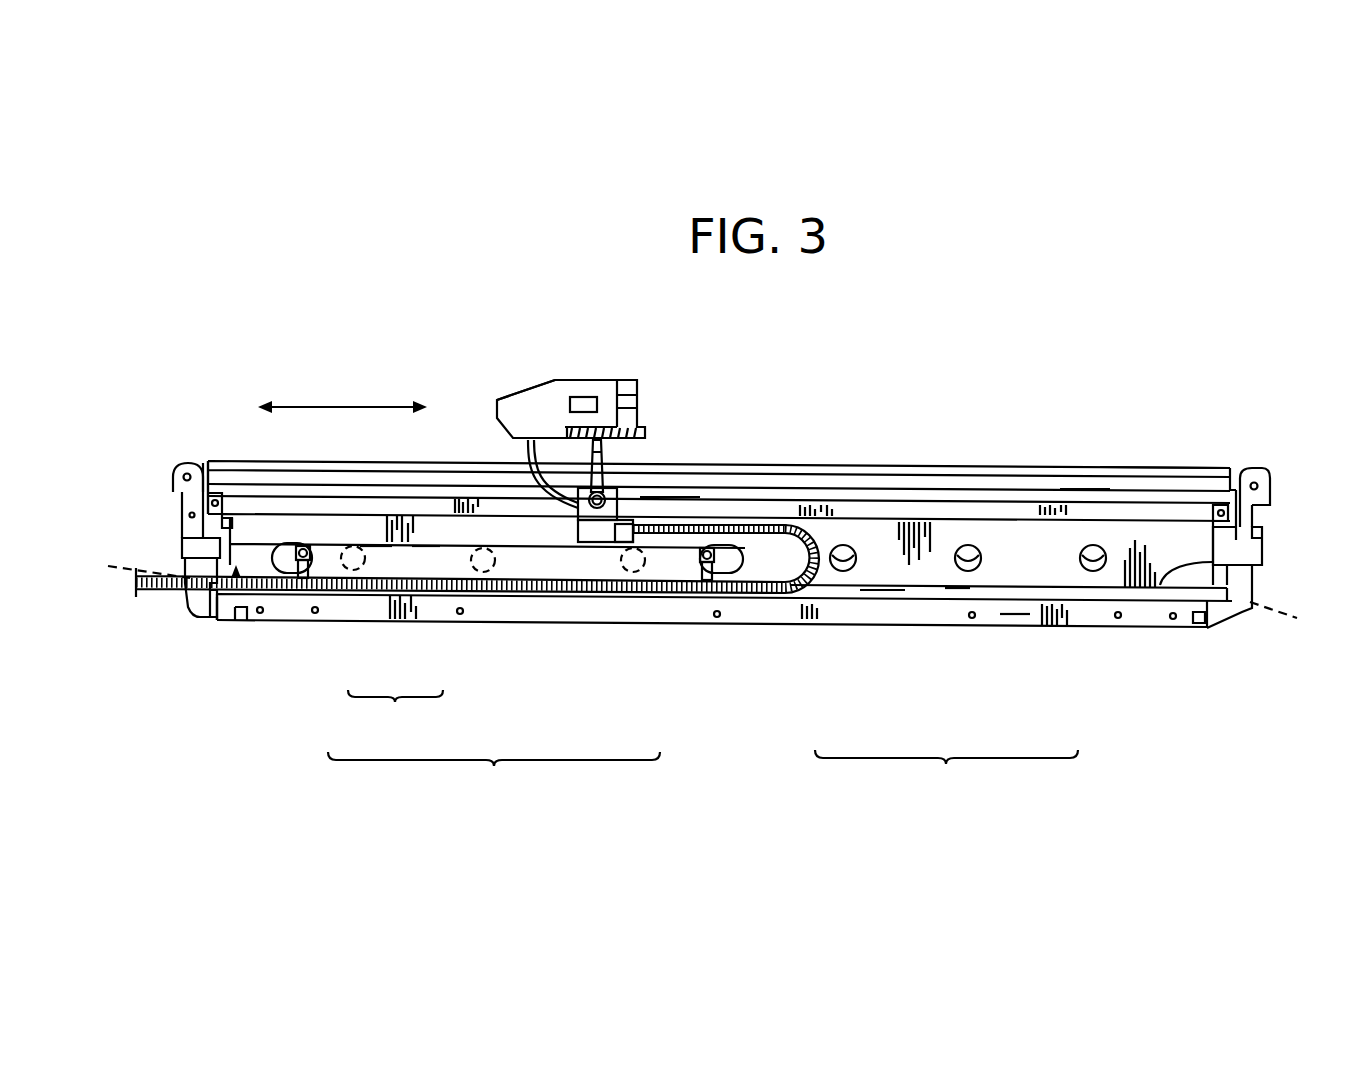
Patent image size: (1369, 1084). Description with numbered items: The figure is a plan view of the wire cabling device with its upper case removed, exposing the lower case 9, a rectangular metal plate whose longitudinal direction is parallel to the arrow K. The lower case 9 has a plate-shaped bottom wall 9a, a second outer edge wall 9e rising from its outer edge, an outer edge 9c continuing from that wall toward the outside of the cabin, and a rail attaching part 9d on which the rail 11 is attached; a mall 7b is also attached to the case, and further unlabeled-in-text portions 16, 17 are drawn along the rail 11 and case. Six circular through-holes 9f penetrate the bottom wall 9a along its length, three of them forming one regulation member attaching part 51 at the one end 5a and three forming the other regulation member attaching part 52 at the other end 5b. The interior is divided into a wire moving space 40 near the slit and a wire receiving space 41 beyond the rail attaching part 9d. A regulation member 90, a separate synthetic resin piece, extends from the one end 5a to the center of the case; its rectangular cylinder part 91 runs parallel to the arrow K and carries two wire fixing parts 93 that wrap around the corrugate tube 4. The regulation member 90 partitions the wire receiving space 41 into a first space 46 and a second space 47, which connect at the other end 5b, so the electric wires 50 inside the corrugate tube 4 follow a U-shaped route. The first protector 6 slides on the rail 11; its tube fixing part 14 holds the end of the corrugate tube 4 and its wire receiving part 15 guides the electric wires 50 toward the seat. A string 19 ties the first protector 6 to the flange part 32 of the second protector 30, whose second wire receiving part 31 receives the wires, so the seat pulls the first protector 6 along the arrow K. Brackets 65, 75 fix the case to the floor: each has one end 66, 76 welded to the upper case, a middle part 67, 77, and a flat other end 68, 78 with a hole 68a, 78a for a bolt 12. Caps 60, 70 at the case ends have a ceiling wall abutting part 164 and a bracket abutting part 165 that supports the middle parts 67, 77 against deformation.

The arrow K is at (344, 404).
The corrugate tube 4 is at (758, 628).
The one end 5a is at (236, 588).
The other end 5b is at (1207, 625).
The first protector 6 is at (610, 484).
The mall 7b is at (898, 467).
The lower case 9 is at (1112, 630).
The bottom wall 9a is at (955, 567).
The outer edge 9c is at (1013, 610).
The rail attaching part 9d is at (1185, 508).
The second outer edge wall 9e is at (890, 593).
The through-holes 9f is at (1060, 723).
The rail 11 is at (990, 504).
The bolts 12 is at (302, 543).
The tube fixing part 14 is at (620, 547).
The wire receiving part 15 is at (660, 495).
The rail end portion 16 is at (1148, 468).
The rail portion 17 is at (1093, 488).
The string 19 is at (612, 445).
The second protector 30 is at (606, 379).
The second wire receiving part 31 is at (497, 396).
The flange part 32 is at (545, 379).
The wire moving space 40 is at (372, 493).
The wire receiving space 41 is at (395, 713).
The first space 46 is at (375, 527).
The second space 47 is at (427, 590).
The electric wires 50 is at (520, 456).
The regulation member attaching part 51 is at (494, 777).
The regulation member attaching part 52 is at (946, 771).
The cap 60 is at (197, 606).
The bracket 65 is at (180, 503).
The one end 66 is at (232, 532).
The middle part 67 is at (200, 546).
The other end 68 is at (178, 470).
The hole 68a is at (190, 473).
The cap 70 is at (1257, 580).
The bracket 75 is at (1272, 492).
The one end 76 is at (1217, 567).
The middle part 77 is at (1250, 550).
The other end 78 is at (1246, 470).
The hole 78a is at (1258, 484).
The regulation member 90 is at (485, 574).
The rectangular cylinder part 91 is at (541, 570).
The wire fixing parts 93 is at (708, 593).
The ceiling wall abutting part 164 is at (1160, 585).
The bracket abutting part 165 is at (703, 599).